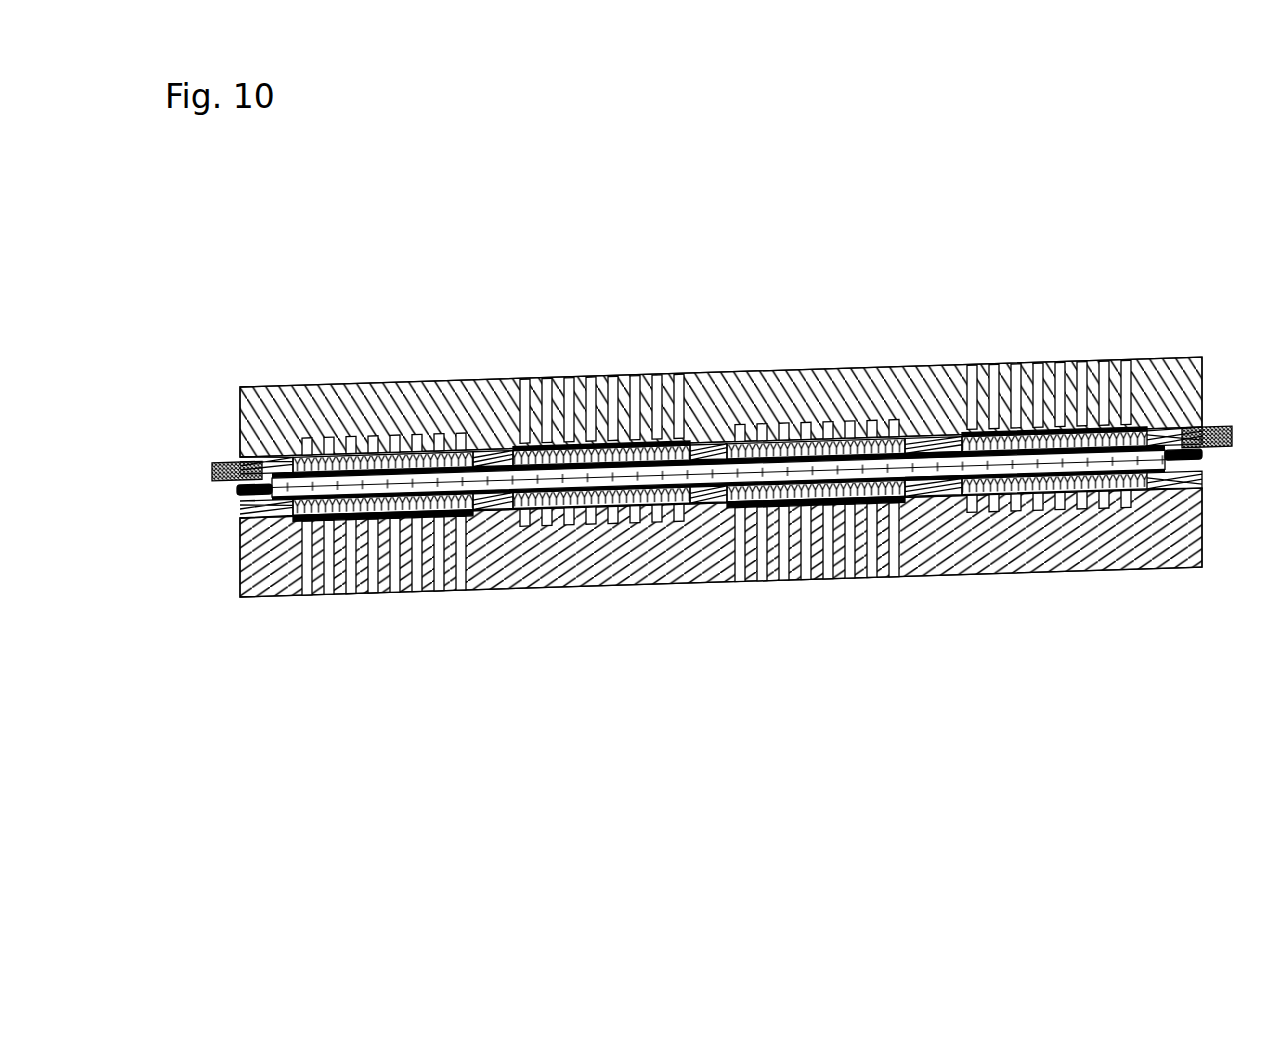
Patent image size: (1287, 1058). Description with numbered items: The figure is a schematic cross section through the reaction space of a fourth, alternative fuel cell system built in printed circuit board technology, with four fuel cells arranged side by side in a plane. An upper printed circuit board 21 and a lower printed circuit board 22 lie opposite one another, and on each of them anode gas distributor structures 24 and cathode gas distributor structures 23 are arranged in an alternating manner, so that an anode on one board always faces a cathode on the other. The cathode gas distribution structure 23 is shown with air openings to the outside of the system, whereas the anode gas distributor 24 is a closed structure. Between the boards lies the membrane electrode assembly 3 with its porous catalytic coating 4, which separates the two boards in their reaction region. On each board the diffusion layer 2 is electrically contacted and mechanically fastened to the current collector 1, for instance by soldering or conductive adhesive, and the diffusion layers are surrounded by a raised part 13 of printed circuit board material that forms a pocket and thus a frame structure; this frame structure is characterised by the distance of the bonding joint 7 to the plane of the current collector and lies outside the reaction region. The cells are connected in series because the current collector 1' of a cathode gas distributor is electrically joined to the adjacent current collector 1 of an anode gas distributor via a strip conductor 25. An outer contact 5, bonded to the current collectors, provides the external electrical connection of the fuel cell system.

The current collector 1 is at (718, 496).
The current collector of the cathode gas distributor 1' is at (692, 478).
The diffusion layer 2 is at (740, 497).
The membrane electrode assembly 3 is at (710, 473).
The porous catalytic coating 4 is at (518, 462).
The outer contact 5 is at (1214, 448).
The bonding joint 7 is at (1174, 465).
The raised part 13 is at (948, 473).
The printed circuit board 21 is at (280, 422).
The printed circuit board 22 is at (263, 540).
The cathode gas distributor structure 23 is at (1040, 378).
The anode gas distributor structure 24 is at (410, 437).
The strip conductor 25 is at (708, 440).